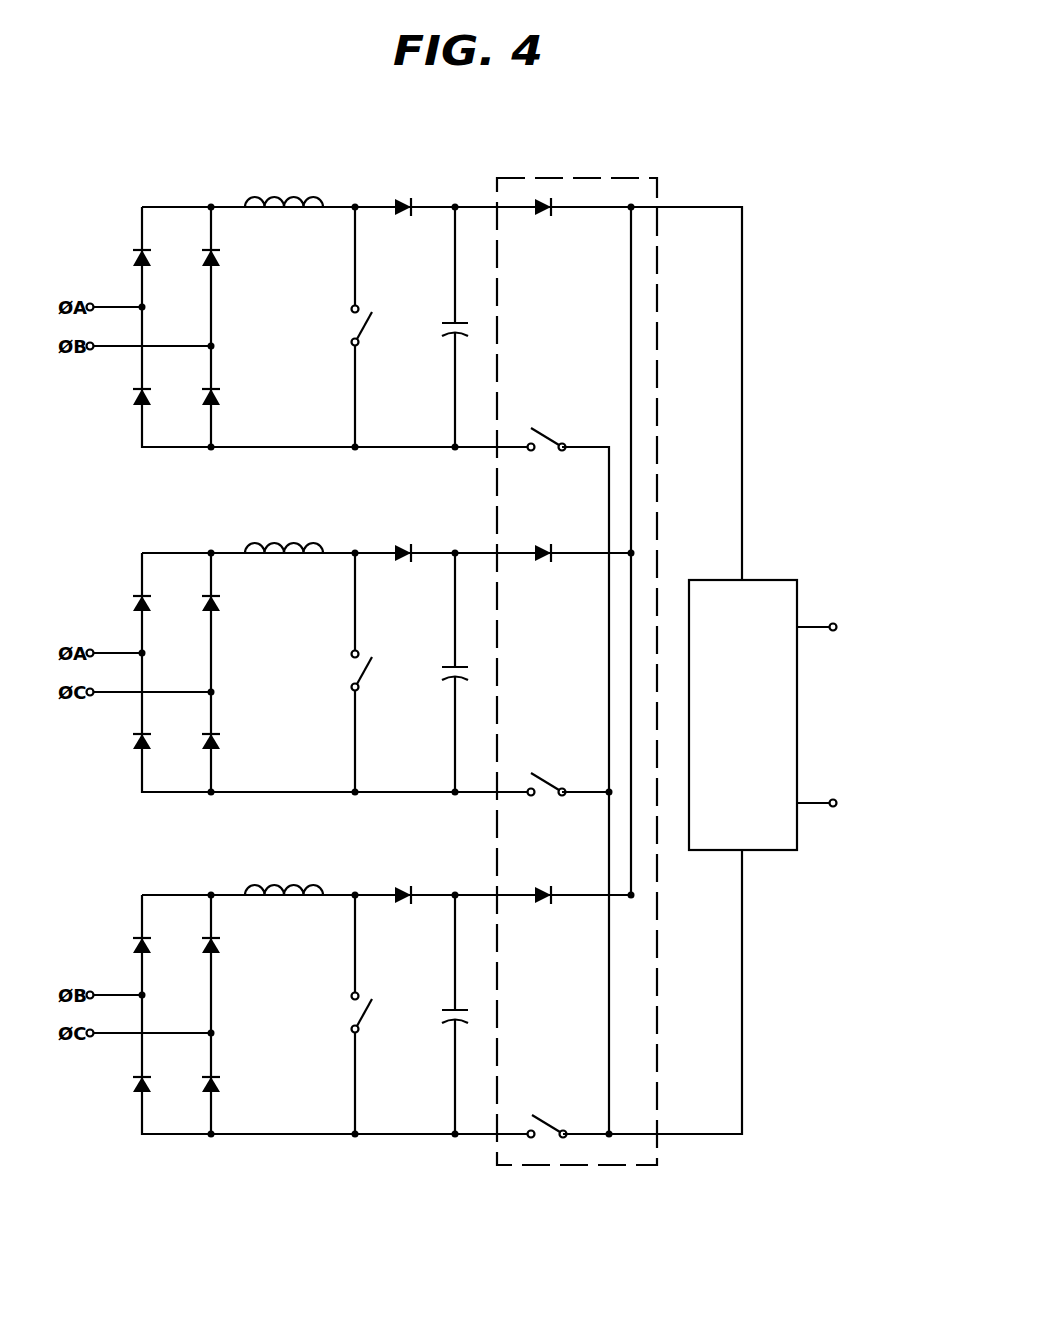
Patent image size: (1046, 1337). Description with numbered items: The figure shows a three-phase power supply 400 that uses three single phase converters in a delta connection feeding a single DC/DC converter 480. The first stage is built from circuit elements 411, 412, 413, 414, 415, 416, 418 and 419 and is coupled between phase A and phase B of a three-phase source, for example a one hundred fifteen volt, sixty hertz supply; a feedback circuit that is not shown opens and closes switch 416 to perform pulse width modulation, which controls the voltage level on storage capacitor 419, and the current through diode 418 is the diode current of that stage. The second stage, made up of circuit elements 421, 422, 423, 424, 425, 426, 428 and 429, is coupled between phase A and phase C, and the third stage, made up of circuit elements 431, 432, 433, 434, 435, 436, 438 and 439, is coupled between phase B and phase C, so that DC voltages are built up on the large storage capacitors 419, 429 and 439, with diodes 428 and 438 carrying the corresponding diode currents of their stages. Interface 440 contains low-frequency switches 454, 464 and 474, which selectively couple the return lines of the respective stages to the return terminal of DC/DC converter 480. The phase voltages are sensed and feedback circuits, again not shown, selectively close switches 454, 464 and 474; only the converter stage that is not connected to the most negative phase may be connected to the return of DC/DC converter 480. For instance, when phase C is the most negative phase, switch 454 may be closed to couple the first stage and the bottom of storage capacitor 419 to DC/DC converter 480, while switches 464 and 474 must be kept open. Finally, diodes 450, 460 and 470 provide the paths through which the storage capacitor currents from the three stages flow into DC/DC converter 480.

The three-phase power supply 400 is at (138, 150).
The first stage circuit element 411 is at (140, 248).
The first stage circuit element 412 is at (215, 265).
The first stage circuit element 413 is at (138, 402).
The first stage circuit element 414 is at (218, 388).
The first stage circuit element 415 is at (249, 200).
The switch 416 is at (364, 327).
The diode 418 is at (402, 213).
The storage capacitor 419 is at (449, 322).
The second stage circuit element 421 is at (140, 594).
The second stage circuit element 422 is at (215, 611).
The second stage circuit element 423 is at (138, 746).
The second stage circuit element 424 is at (218, 733).
The second stage circuit element 425 is at (249, 546).
The second stage circuit element 426 is at (364, 672).
The diode 428 is at (402, 559).
The storage capacitor 429 is at (451, 666).
The third stage circuit element 431 is at (140, 936).
The third stage circuit element 432 is at (217, 953).
The third stage circuit element 433 is at (138, 1088).
The third stage circuit element 434 is at (220, 1075).
The third stage circuit element 435 is at (251, 888).
The third stage circuit element 436 is at (366, 1015).
The diode 438 is at (405, 901).
The storage capacitor 439 is at (453, 1008).
The interface 440 is at (635, 177).
The diode 450 is at (540, 213).
The low-frequency switch 454 is at (543, 452).
The diode 460 is at (542, 559).
The low-frequency switch 464 is at (543, 797).
The diode 470 is at (546, 901).
The low-frequency switch 474 is at (546, 1117).
The DC/DC converter 480 is at (769, 579).